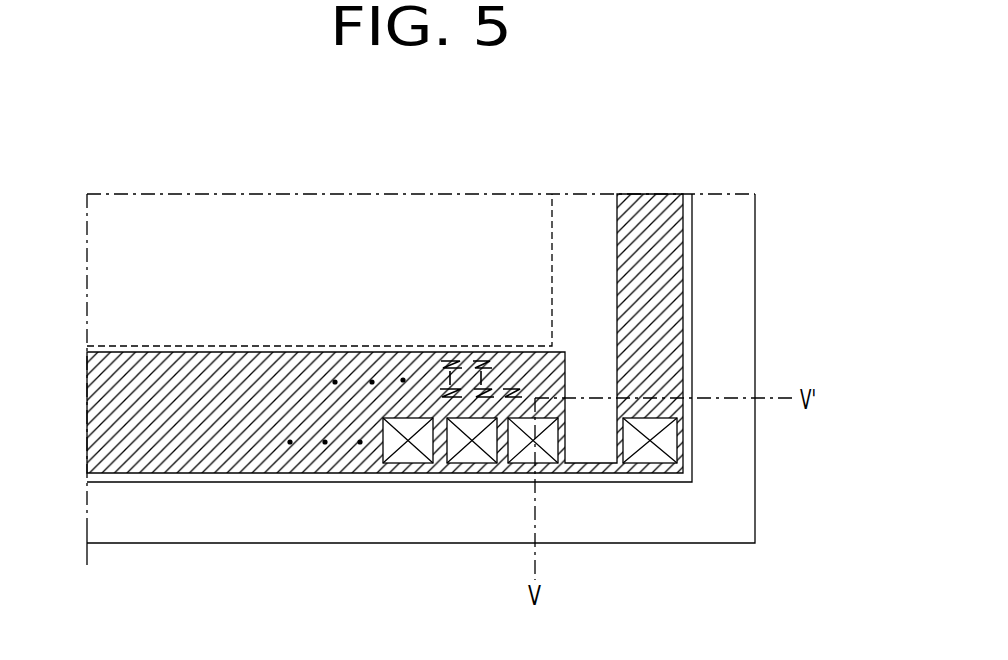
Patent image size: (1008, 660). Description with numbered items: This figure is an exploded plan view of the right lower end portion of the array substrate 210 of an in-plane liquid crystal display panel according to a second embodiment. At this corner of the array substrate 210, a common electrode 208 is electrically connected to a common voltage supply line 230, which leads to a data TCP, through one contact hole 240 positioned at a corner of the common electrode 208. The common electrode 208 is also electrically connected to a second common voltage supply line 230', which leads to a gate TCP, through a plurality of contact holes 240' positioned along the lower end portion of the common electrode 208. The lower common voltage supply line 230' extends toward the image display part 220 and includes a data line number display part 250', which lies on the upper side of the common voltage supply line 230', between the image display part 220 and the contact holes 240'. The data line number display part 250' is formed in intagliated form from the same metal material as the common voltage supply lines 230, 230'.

The array substrate 210 is at (737, 317).
The common voltage supply line 230 is at (462, 333).
The common electrode 208 is at (688, 277).
The image display part 220 is at (193, 348).
The common voltage supply line 230' is at (346, 494).
The contact holes 240' is at (470, 514).
The contact hole 240 is at (650, 514).
The data line number display part 250' is at (641, 368).